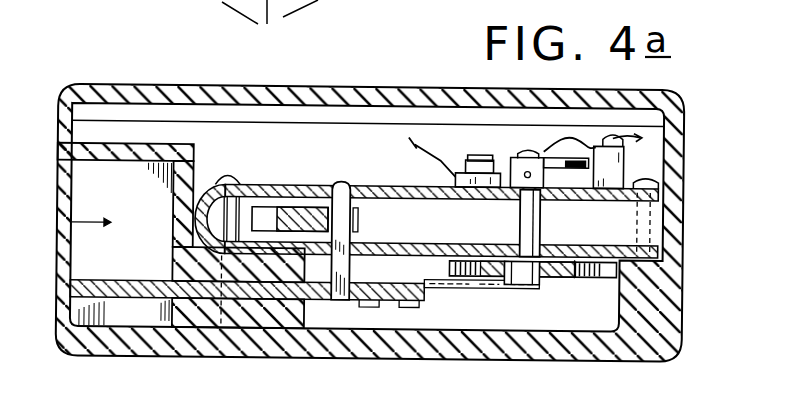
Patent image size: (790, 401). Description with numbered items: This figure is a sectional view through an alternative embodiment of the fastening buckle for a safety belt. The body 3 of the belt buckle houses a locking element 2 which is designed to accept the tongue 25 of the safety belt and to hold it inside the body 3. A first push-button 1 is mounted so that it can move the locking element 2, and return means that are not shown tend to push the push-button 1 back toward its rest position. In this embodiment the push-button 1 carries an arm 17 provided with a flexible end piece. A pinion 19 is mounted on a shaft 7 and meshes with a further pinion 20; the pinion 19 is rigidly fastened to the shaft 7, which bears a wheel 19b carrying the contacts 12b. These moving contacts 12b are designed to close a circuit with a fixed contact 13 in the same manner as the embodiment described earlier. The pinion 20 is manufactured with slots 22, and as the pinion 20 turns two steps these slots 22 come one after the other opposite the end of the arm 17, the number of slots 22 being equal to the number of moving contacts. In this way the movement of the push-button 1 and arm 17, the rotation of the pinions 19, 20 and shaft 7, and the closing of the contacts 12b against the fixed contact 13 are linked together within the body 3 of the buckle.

The first push-button 1 is at (58, 192).
The locking element 2 is at (342, 184).
The body 3 is at (270, 186).
The shaft 7 is at (527, 218).
The contacts 12b is at (470, 153).
The fixed contact 13 is at (473, 182).
The arm 17 is at (131, 287).
The pinion 19 is at (545, 273).
The wheel 19b is at (509, 156).
The pinion 20 is at (575, 262).
The slots 22 is at (507, 284).
The tongue 25 is at (305, 207).